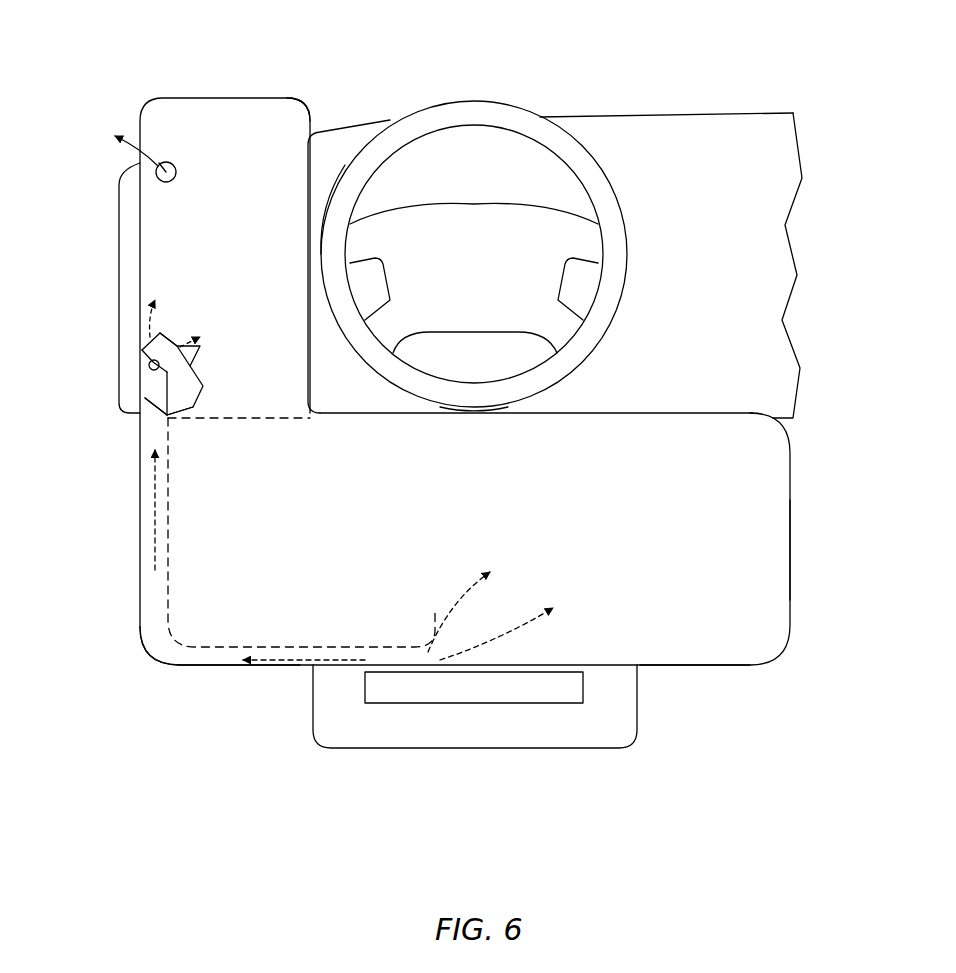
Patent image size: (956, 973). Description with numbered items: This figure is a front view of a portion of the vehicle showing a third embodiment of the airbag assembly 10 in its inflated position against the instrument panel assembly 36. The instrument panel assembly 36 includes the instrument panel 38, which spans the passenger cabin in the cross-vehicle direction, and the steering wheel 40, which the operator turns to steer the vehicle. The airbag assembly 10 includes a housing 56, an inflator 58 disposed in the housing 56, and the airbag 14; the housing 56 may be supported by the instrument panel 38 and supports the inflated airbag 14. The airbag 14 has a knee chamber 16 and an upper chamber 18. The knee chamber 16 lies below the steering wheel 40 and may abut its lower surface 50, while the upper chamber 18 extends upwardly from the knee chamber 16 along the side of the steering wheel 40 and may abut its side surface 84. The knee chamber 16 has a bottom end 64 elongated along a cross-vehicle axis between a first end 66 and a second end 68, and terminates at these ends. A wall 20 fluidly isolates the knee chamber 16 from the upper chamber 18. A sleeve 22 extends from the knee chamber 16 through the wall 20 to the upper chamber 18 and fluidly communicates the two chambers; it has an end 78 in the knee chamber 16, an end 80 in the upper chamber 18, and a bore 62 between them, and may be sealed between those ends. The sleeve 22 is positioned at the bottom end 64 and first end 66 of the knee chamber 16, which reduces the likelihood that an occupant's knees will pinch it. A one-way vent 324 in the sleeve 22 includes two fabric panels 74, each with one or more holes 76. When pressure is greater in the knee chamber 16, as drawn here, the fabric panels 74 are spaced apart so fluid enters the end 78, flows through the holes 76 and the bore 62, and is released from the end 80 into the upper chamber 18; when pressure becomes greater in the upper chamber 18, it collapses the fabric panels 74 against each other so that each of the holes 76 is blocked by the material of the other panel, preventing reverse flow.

The airbag assembly 10 is at (95, 62).
The airbag 14 is at (205, 97).
The knee chamber 16 is at (795, 483).
The upper chamber 18 is at (298, 100).
The wall 20 is at (263, 420).
The sleeve 22 is at (205, 650).
The instrument panel assembly 36 is at (794, 108).
The instrument panel 38 is at (718, 113).
The steering wheel 40 is at (440, 101).
The lower surface 50 is at (470, 410).
The housing 56 is at (340, 750).
The inflator 58 is at (550, 705).
The bore 62 is at (143, 640).
The bottom end 64 is at (668, 668).
The first end 66 is at (140, 558).
The second end 68 is at (795, 535).
The fabric panels 74 is at (153, 363).
The holes 76 is at (167, 365).
The end 78 is at (420, 640).
The end 80 is at (170, 388).
The side surface 84 is at (322, 245).
The one-way vent 324 is at (135, 383).